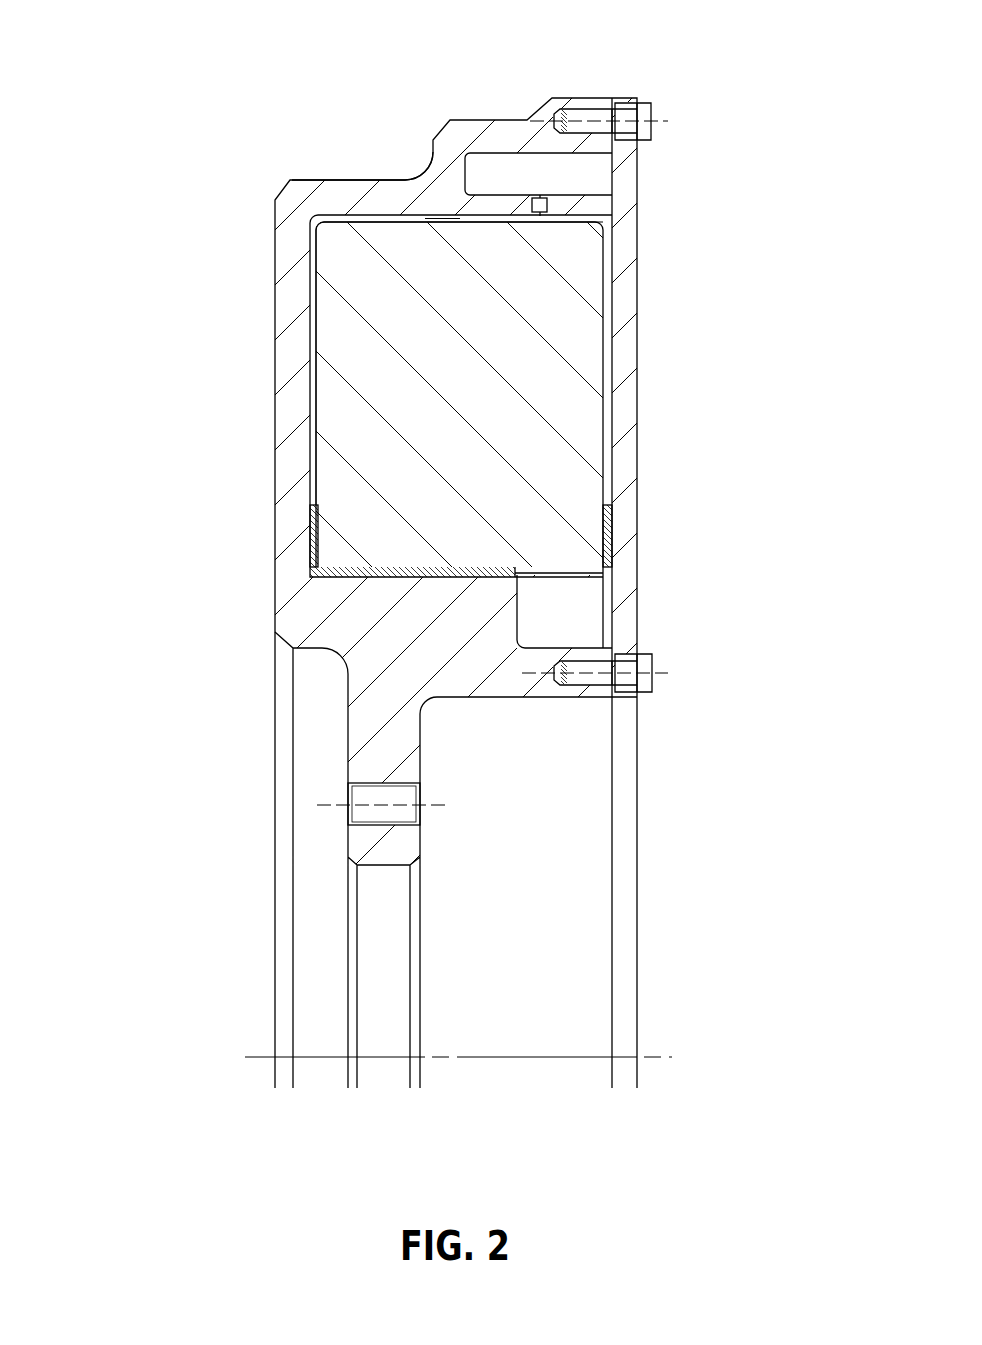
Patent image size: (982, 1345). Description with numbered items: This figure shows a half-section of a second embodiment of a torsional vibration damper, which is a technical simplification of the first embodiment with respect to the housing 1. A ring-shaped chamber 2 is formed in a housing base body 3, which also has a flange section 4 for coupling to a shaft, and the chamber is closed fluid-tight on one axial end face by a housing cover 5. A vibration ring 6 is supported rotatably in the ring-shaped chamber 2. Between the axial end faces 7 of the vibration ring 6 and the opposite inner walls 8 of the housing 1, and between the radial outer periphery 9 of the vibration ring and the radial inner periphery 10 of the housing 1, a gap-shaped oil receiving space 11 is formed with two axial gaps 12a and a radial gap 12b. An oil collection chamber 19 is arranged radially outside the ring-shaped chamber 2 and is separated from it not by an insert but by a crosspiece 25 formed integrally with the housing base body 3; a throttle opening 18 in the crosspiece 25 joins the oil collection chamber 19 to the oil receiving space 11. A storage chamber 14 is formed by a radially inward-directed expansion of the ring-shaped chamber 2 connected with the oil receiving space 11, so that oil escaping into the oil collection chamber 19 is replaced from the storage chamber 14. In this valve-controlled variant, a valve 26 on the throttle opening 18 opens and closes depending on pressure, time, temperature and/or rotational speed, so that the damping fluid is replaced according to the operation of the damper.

The housing 1 is at (280, 190).
The ring-shaped chamber 2 is at (623, 233).
The housing base body 3 is at (335, 195).
The flange section 4 is at (373, 850).
The housing cover 5 is at (611, 290).
The vibration ring 6 is at (560, 305).
The axial end faces 7 is at (611, 403).
The inner walls 8 is at (611, 450).
The radial outer periphery 9 is at (360, 213).
The radial inner periphery 10 is at (441, 218).
The gap-shaped oil receiving space 11 is at (611, 362).
The axial gaps 12a is at (611, 327).
The radial gap 12b is at (383, 218).
The storage chamber 14 is at (553, 613).
The throttle opening 18 is at (541, 196).
The oil collection chamber 19 is at (528, 175).
The crosspiece 25 is at (505, 200).
The valve 26 is at (585, 218).